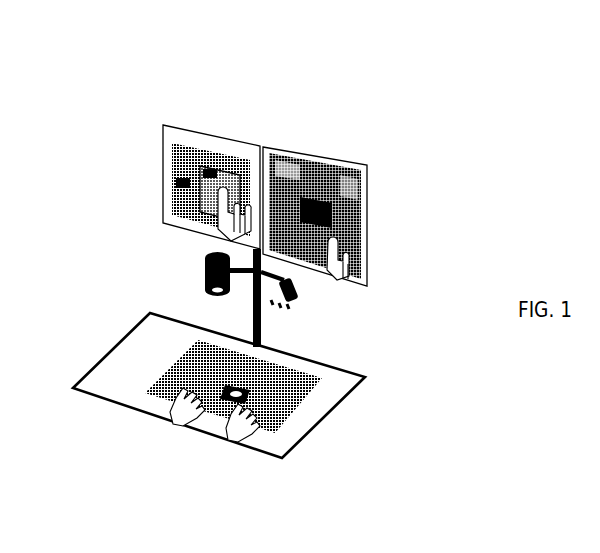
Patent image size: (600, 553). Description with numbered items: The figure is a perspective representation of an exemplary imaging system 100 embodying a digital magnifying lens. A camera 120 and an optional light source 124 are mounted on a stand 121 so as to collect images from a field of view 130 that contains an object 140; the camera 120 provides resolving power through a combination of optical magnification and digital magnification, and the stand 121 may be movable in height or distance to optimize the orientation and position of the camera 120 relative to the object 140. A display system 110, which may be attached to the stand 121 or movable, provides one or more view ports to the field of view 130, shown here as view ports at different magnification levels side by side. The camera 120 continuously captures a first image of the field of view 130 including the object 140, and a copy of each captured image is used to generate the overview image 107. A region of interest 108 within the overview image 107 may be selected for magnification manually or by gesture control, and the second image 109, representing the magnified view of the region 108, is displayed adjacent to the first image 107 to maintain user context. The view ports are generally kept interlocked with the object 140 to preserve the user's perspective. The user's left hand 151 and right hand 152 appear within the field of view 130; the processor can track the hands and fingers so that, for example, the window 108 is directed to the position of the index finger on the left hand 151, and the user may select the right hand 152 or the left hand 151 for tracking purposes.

The imaging system 100 is at (228, 264).
The overview image 107 is at (175, 168).
The region of interest 108 is at (228, 170).
The second image 109 is at (367, 208).
The display system 110 is at (356, 196).
The camera 120 is at (203, 265).
The stand 121 is at (252, 315).
The light source 124 is at (300, 298).
The field of view 130 is at (107, 350).
The object 140 is at (145, 392).
The left hand 151 is at (175, 407).
The right hand 152 is at (218, 412).